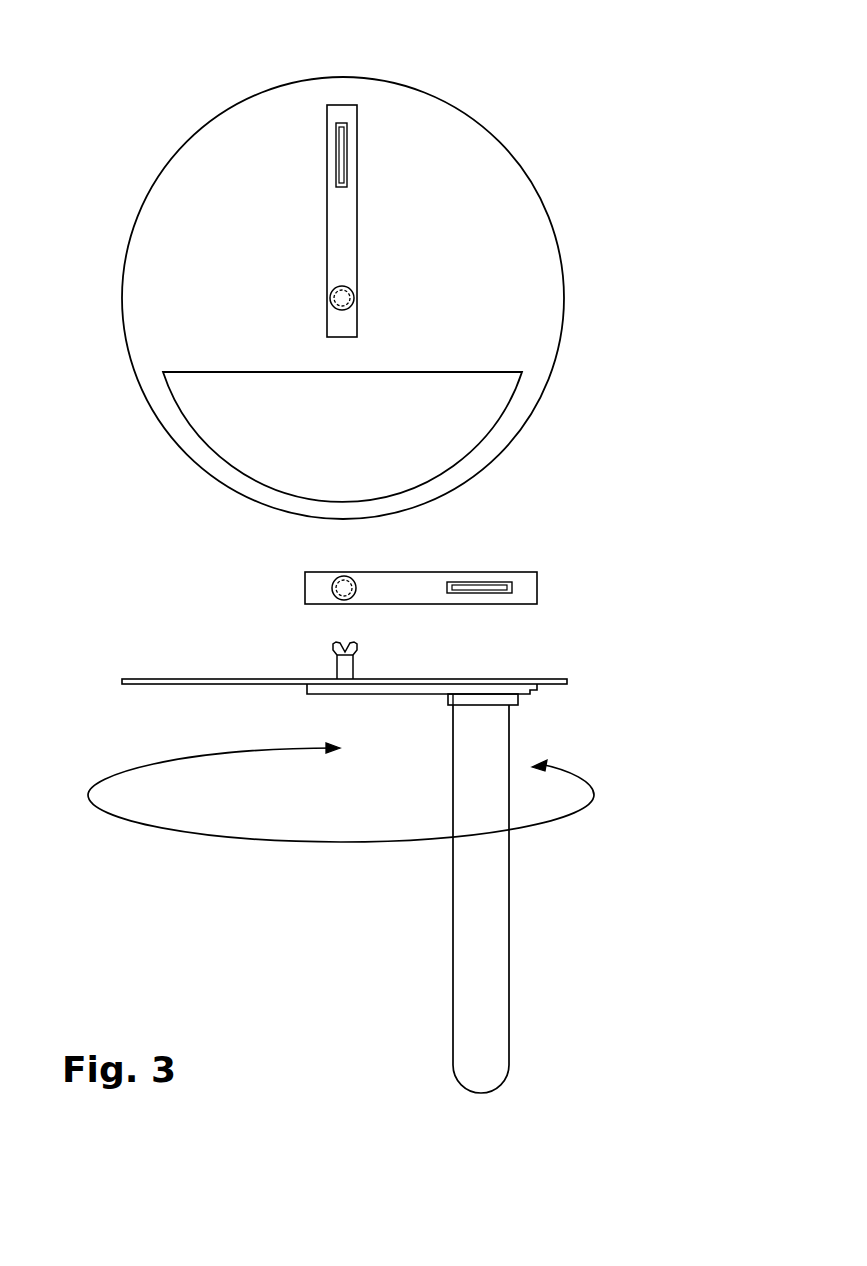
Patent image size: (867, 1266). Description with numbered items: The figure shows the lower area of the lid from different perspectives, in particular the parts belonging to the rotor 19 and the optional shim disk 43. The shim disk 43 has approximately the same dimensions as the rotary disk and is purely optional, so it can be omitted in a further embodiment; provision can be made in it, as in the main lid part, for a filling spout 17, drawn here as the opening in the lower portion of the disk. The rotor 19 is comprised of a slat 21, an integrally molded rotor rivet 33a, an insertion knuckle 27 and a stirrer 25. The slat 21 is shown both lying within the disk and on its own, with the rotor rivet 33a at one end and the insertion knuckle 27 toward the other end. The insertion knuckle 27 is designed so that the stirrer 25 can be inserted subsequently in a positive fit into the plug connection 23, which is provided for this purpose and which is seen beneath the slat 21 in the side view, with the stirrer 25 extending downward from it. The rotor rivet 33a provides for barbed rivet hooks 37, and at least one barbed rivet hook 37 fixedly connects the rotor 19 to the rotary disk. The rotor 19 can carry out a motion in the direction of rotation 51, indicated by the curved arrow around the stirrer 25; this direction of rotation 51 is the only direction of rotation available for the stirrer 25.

The filling spout 17 is at (465, 428).
The rotor 19 is at (565, 657).
The slat 21 is at (345, 110).
The plug connection 23 is at (518, 700).
The stirrer 25 is at (500, 955).
The insertion knuckle 27 is at (340, 157).
The rotor rivet 33a is at (346, 296).
The barbed rivet hook 37 is at (353, 648).
The shim disk 43 is at (487, 162).
The direction of rotation 51 is at (580, 806).